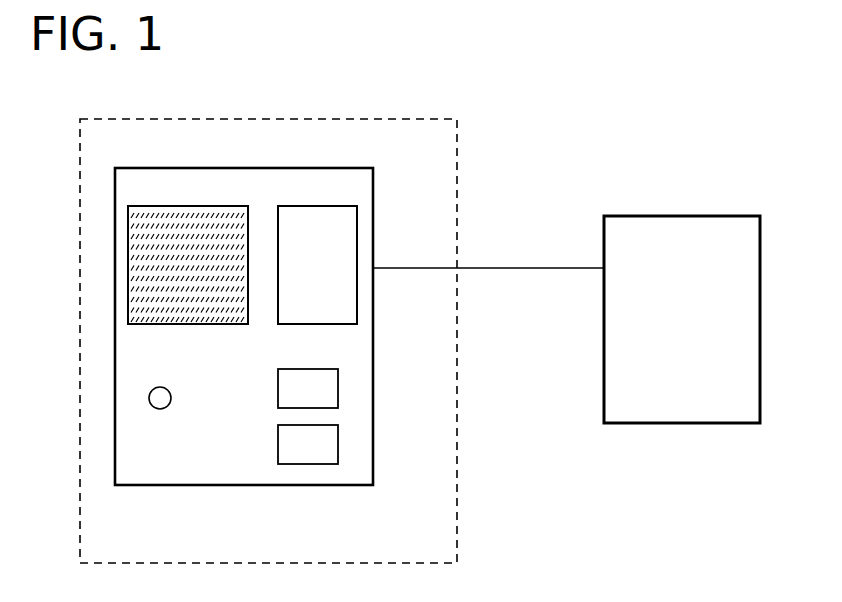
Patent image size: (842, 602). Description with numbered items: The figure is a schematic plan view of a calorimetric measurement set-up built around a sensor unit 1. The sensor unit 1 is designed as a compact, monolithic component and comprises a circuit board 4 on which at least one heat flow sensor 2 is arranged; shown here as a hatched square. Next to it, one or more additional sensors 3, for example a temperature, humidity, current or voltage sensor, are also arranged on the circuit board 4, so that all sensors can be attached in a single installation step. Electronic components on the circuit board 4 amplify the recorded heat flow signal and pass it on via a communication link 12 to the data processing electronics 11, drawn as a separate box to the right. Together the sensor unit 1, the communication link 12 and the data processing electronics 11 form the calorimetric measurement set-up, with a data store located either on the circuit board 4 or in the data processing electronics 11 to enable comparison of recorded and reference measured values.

The sensor unit 1 is at (307, 563).
The heat flow sensor 2 is at (213, 206).
The additional sensor 3 is at (318, 206).
The circuit board 4 is at (373, 312).
The data processing electronics 11 is at (708, 350).
The communication link 12 is at (528, 268).